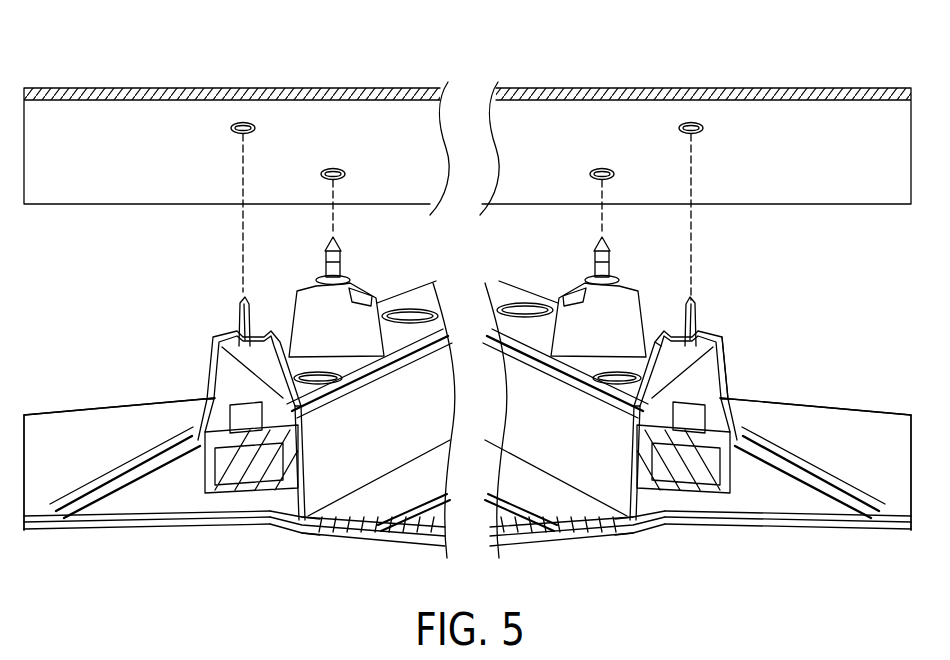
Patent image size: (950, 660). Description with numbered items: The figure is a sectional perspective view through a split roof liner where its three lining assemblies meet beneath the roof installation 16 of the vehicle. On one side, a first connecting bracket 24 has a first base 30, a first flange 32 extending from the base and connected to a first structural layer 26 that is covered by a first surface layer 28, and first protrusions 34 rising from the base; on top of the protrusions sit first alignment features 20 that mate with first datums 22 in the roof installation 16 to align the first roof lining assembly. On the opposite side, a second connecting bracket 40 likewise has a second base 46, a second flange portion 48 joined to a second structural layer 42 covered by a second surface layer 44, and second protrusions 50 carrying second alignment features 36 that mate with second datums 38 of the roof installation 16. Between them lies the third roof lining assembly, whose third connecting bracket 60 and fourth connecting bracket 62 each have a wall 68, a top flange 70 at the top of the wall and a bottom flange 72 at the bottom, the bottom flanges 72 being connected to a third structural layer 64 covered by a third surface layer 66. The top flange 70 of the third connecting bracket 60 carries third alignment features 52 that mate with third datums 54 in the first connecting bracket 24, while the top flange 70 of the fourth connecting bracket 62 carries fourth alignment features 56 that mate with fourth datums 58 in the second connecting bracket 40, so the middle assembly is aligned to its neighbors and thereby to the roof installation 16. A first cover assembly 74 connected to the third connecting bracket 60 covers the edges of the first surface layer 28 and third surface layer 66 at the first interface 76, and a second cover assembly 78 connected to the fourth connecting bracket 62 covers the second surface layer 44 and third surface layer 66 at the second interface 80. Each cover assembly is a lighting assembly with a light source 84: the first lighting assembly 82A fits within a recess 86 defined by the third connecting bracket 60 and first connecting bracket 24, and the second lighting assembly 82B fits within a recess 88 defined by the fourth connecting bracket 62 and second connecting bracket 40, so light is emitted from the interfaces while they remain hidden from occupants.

The roof installation 16 is at (396, 108).
The first alignment features 20 is at (616, 258).
The first datums 22 is at (603, 168).
The first connecting brackets 24 is at (752, 412).
The first structural layer 26 is at (888, 510).
The first surface layer 28 is at (898, 530).
The first base 30 is at (565, 300).
The first flange 32 is at (845, 492).
The first protrusions 34 is at (645, 303).
The second alignment features 36 is at (330, 257).
The second datums 38 is at (333, 168).
The second connecting brackets 40 is at (200, 420).
The second structural layer 42 is at (55, 512).
The second surface layer 44 is at (72, 528).
The second base 46 is at (398, 300).
The second flange portion 48 is at (95, 497).
The second protrusions 50 is at (289, 330).
The third alignment features 52 is at (560, 383).
The third datums 54 is at (520, 305).
The fourth alignment features 56 is at (383, 360).
The fourth datums 58 is at (408, 312).
The third connecting bracket 60 is at (668, 530).
The fourth connecting bracket 62 is at (268, 530).
The third structural layer 64 is at (428, 541).
The third surface layer 66 is at (322, 545).
The wall 68 is at (300, 537).
The top flange 70 is at (220, 345).
The bottom flange 72 is at (352, 538).
The first cover assembly 74 is at (770, 438).
The first interface 76 is at (783, 567).
The second cover assembly 78 is at (183, 437).
The second interface 80 is at (152, 567).
The first lighting assembly 82A is at (678, 527).
The second lighting assembly 82B is at (258, 527).
The light source 84 is at (228, 480).
The recess 86 is at (628, 434).
The recess 88 is at (305, 433).